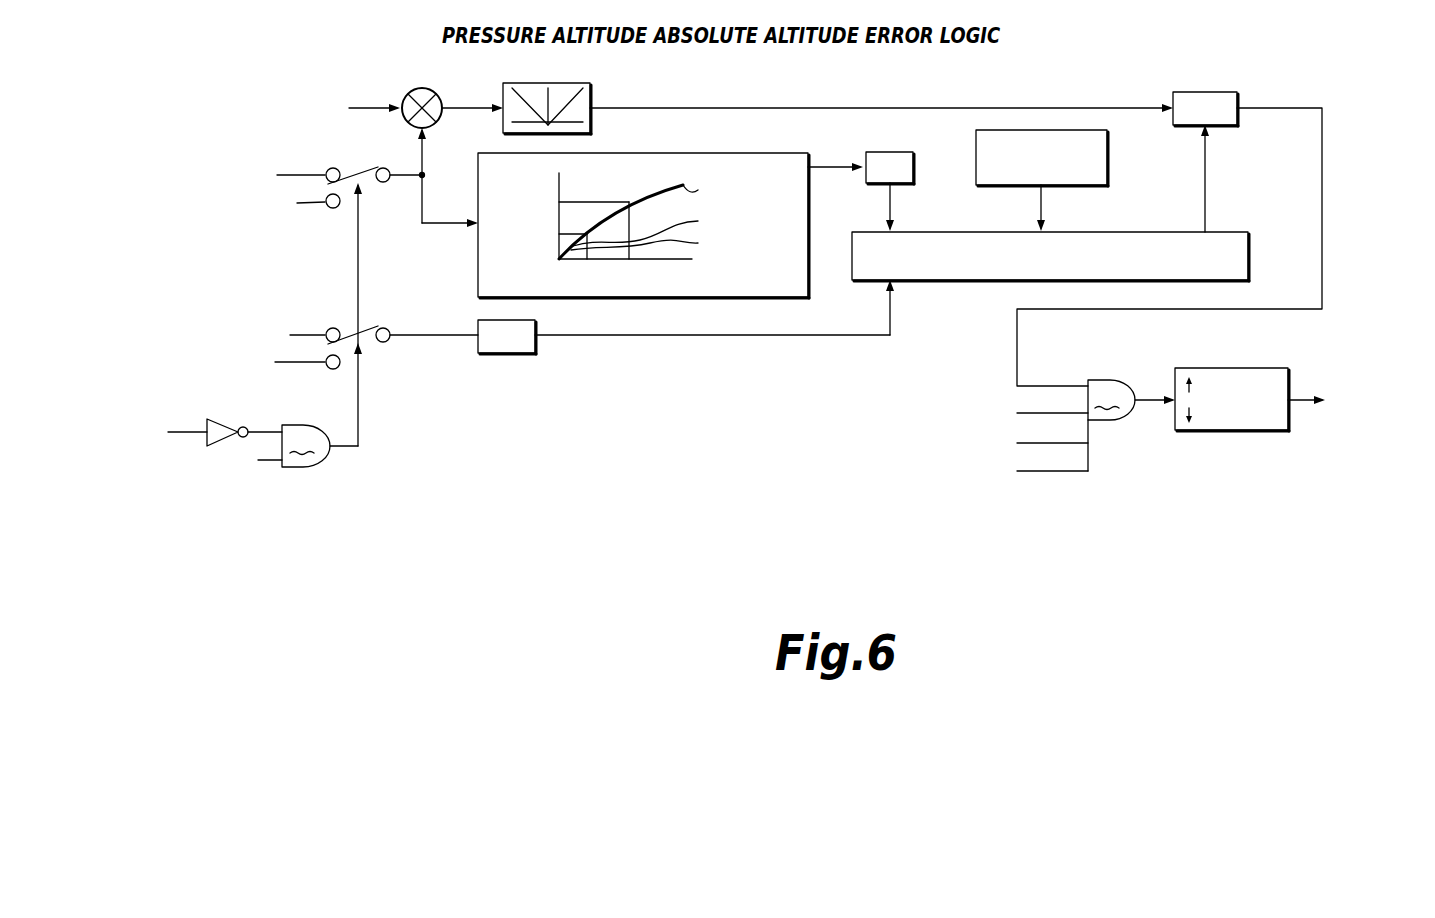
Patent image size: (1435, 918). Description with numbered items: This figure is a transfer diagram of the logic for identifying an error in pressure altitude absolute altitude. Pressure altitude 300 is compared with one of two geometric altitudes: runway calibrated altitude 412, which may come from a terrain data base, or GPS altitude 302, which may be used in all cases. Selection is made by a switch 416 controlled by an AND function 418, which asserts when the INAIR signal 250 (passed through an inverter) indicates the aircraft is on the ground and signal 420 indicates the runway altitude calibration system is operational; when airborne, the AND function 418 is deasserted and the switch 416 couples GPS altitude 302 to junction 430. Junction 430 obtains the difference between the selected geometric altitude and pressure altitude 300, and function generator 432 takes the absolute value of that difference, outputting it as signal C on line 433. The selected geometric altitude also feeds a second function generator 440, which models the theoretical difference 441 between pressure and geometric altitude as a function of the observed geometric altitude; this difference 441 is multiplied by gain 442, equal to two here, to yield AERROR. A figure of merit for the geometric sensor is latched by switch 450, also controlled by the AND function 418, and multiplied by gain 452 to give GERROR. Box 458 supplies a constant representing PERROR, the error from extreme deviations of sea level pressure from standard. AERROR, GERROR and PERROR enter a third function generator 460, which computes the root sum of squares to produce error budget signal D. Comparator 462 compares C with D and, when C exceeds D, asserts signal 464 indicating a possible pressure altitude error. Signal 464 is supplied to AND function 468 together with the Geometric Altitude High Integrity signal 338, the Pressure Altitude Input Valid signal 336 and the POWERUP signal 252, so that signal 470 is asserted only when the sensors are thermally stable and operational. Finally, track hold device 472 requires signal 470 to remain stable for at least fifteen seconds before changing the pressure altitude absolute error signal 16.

The pressure altitude 300 is at (378, 104).
The GPS altitude 302 is at (309, 210).
The runway calibrated altitude 412 is at (303, 172).
The switch 416 is at (359, 172).
The junction 430 is at (437, 122).
The function generator 432 is at (503, 96).
The line 433 is at (725, 108).
The second function generator 440 is at (478, 271).
The difference signal 441 is at (843, 167).
The gain 442 is at (867, 184).
The box 458 is at (1108, 157).
The third function generator 460 is at (1240, 232).
The comparator 462 is at (1173, 125).
The signal 464 is at (1322, 144).
The AND function 468 is at (1111, 425).
The signal 470 is at (1152, 401).
The track hold device 472 is at (1233, 368).
The pressure altitude absolute error signal 16 is at (1300, 400).
The Geometric Altitude High Integrity signal 338 is at (1070, 413).
The Pressure Altitude Input Valid signal 336 is at (1070, 443).
The POWERUP signal 252 is at (1075, 472).
The INAIR signal 250 is at (187, 432).
The AND function 418 is at (320, 446).
The signal 420 is at (259, 460).
The switch 450 is at (363, 335).
The gain 452 is at (492, 353).